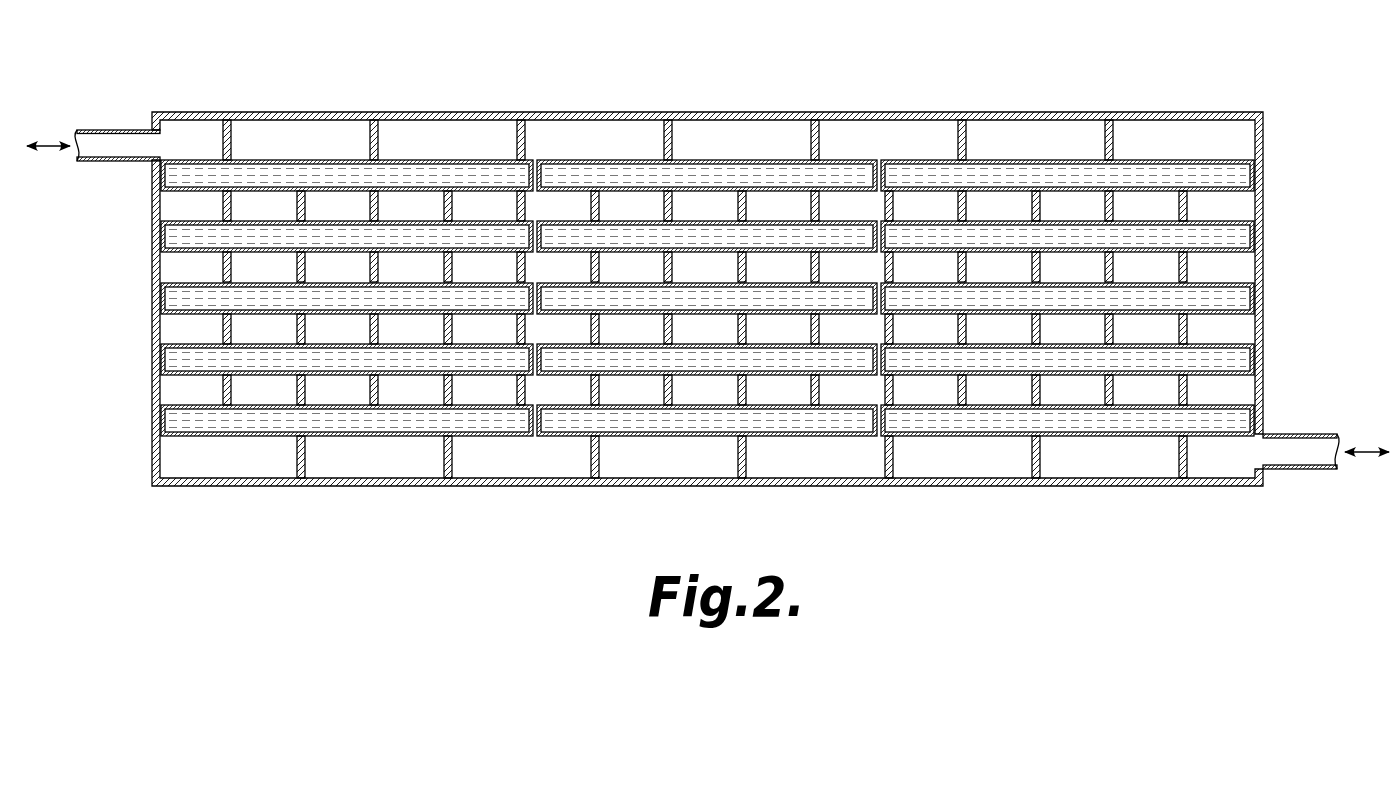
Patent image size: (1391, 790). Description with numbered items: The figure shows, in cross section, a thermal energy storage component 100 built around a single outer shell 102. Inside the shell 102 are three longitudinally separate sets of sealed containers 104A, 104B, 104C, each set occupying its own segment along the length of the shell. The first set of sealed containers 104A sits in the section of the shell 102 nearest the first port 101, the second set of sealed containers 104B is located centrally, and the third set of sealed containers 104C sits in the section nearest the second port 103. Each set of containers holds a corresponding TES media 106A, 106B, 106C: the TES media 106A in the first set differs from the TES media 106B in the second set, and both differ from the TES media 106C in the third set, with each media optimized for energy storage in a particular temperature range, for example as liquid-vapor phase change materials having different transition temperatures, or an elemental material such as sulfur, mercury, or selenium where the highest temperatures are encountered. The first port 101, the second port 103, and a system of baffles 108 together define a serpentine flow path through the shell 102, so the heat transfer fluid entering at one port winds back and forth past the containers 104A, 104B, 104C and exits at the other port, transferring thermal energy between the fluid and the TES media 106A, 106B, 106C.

The TES component 100 is at (772, 61).
The first port 101 is at (114, 163).
The outer shell 102 is at (477, 110).
The second port 103 is at (1300, 433).
The first set of sealed containers 104A is at (286, 219).
The second set of sealed containers 104B is at (645, 219).
The third set of sealed containers 104C is at (1060, 219).
The TES media 106A is at (410, 360).
The TES media 106B is at (714, 360).
The TES media 106C is at (940, 362).
The baffles 108 is at (1046, 398).